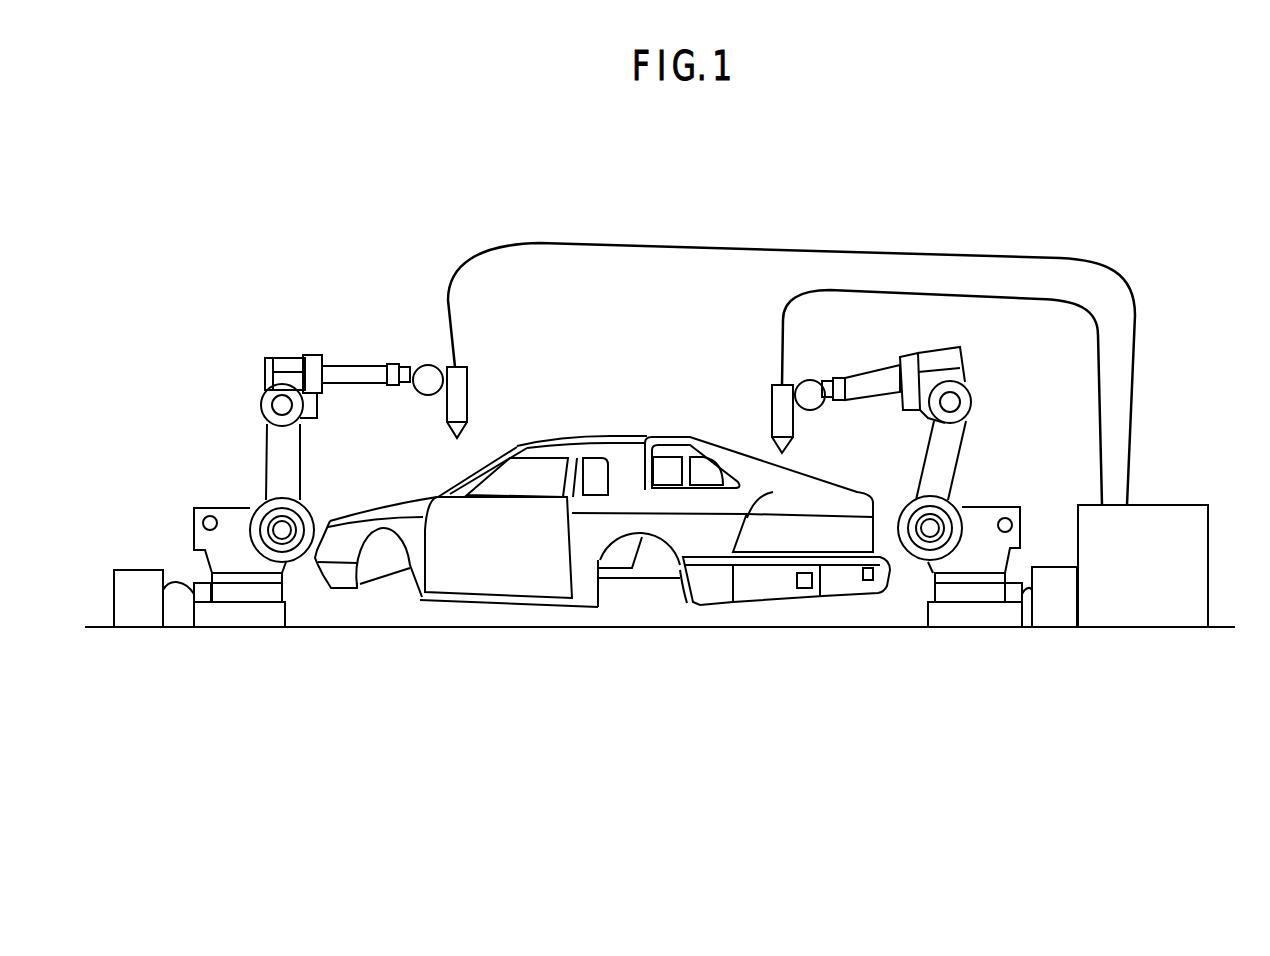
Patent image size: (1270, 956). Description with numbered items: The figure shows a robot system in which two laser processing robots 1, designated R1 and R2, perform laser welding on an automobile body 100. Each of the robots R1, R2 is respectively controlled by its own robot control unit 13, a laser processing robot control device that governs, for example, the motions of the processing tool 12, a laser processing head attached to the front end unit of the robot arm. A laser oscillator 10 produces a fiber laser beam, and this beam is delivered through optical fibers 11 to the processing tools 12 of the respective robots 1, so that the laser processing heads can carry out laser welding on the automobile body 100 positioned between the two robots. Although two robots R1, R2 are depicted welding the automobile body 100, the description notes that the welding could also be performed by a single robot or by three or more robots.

The laser processing robot 1 is at (639, 444).
The first laser processing robot R1 is at (247, 360).
The second laser processing robot R2 is at (982, 417).
The laser oscillator 10 is at (1195, 505).
The optical fiber 11 is at (878, 250).
The processing tool 12 is at (470, 380).
The robot control unit 13 is at (135, 570).
The automobile body 100 is at (624, 398).